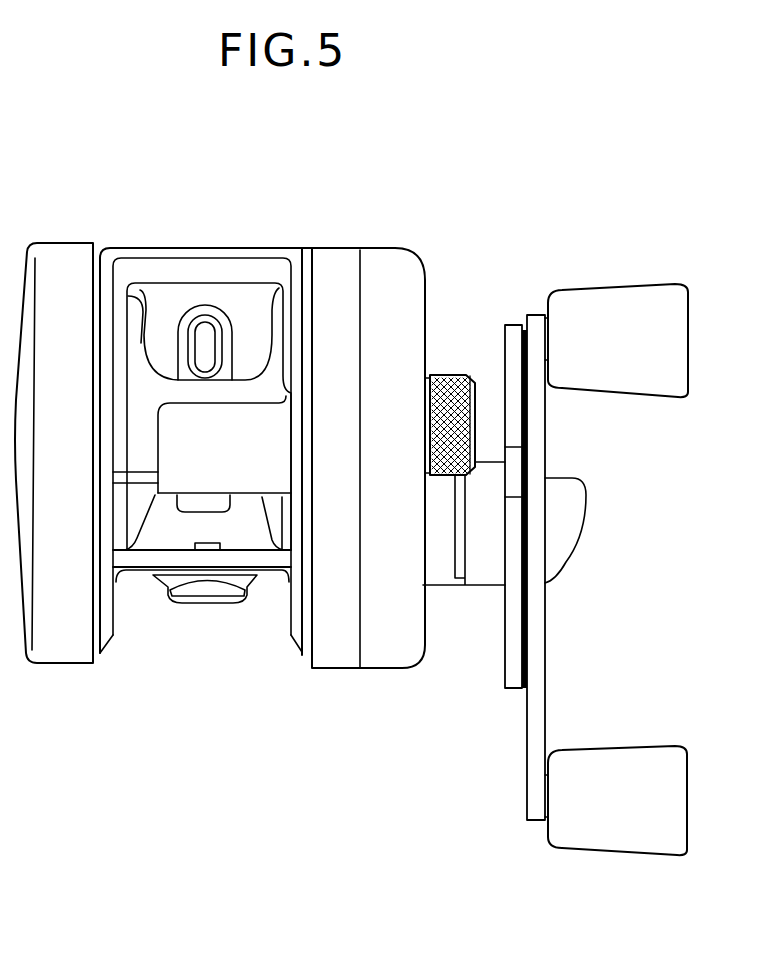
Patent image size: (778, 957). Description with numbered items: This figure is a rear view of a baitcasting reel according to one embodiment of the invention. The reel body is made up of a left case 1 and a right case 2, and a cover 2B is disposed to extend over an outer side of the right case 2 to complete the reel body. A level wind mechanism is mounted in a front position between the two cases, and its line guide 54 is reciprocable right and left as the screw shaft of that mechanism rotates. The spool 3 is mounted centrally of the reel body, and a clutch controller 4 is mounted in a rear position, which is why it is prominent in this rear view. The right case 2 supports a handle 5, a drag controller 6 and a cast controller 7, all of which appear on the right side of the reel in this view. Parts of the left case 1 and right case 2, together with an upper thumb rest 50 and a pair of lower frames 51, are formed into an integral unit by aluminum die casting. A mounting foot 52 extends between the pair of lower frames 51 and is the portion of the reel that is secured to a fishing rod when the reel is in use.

The left case 1 is at (58, 243).
The right case 2 is at (367, 408).
The cover 2B is at (385, 240).
The spool 3 is at (136, 345).
The clutch controller 4 is at (273, 464).
The handle 5 is at (540, 695).
The drag controller 6 is at (510, 678).
The cast controller 7 is at (452, 373).
The upper thumb rest 50 is at (158, 253).
The lower frames 51 is at (138, 571).
The mounting foot 52 is at (222, 603).
The line guide 54 is at (206, 310).